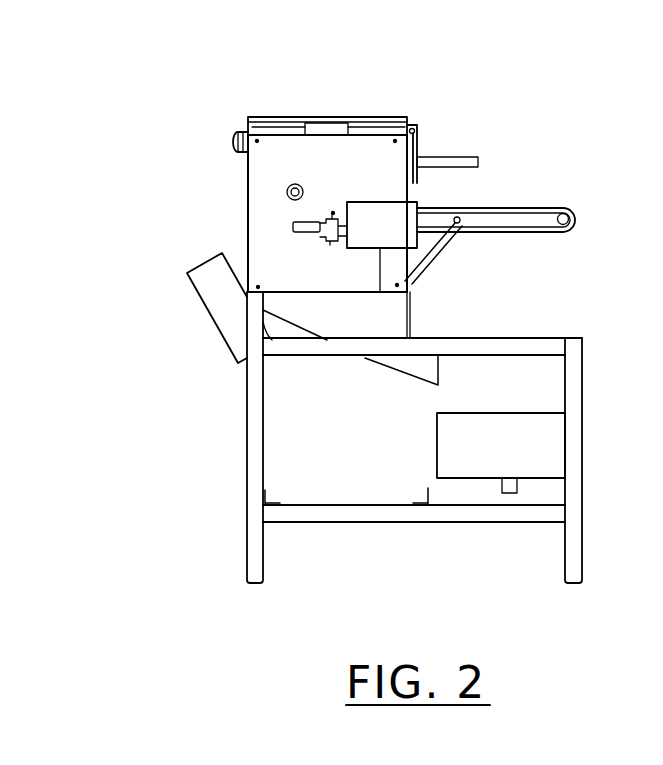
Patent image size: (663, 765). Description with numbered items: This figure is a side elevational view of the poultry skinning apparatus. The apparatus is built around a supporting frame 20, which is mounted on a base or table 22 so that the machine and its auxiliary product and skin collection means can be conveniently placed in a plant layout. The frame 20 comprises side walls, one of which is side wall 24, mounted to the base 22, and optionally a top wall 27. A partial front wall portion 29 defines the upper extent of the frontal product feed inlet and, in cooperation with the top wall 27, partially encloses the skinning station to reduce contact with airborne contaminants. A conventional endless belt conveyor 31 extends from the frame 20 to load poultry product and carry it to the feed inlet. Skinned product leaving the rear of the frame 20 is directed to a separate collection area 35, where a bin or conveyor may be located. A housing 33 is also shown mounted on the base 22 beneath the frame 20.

The supporting frame 20 is at (217, 142).
The base or table 22 is at (235, 472).
The side wall 24 is at (273, 217).
The top wall 27 is at (322, 113).
The partial front wall portion 29 is at (418, 133).
The endless belt conveyor 31 is at (497, 232).
The housing 33 is at (538, 448).
The collection area 35 is at (318, 498).